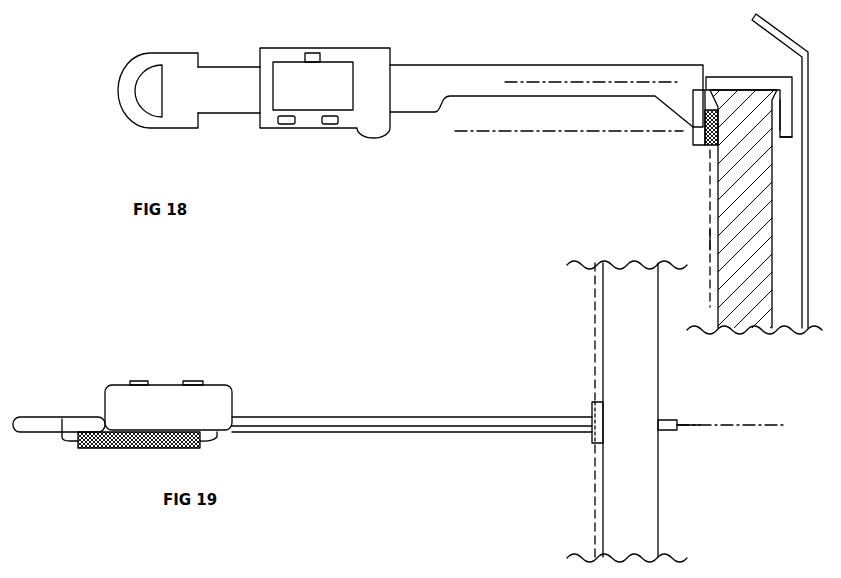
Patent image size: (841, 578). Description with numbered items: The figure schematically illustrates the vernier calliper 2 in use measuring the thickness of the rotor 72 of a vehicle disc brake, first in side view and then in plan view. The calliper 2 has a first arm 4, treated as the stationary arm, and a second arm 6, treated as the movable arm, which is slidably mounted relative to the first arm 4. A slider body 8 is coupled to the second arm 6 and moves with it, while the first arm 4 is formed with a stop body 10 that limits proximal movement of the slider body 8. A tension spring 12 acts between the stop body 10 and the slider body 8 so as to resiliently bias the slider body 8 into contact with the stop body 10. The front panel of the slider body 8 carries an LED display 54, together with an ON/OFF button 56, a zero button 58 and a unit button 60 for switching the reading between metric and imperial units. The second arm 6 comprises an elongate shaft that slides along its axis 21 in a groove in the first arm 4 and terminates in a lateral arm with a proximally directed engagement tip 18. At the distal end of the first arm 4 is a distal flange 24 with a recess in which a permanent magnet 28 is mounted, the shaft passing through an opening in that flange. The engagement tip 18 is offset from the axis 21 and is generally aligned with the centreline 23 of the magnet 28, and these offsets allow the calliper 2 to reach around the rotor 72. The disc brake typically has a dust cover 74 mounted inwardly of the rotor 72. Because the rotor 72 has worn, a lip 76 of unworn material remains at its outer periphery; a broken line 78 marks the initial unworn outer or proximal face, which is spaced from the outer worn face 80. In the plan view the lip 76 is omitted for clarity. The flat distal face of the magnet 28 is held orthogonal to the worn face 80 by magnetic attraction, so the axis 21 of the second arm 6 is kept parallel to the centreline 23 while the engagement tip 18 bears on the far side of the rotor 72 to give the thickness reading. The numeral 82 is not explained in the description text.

In FIG. 18, the vernier calliper 2 is at (447, 54).
In FIG. 19, the vernier calliper 2 is at (358, 361).
In FIG. 18, the first arm 4 is at (505, 75).
In FIG. 19, the first arm 4 is at (370, 414).
In FIG. 18, the second arm 6 is at (740, 77).
In FIG. 18, the slider body 8 is at (372, 62).
In FIG. 19, the slider body 8 is at (222, 400).
In FIG. 18, the stop body 10 is at (172, 118).
In FIG. 19, the stop body 10 is at (35, 425).
In FIG. 19, the tension spring 12 is at (93, 448).
In FIG. 18, the engagement tip 18 is at (770, 128).
In FIG. 19, the engagement tip 18 is at (677, 422).
In FIG. 18, the axis 21 is at (563, 82).
In FIG. 19, the axis 21 is at (775, 425).
In FIG. 18, the centreline 23 is at (514, 133).
In FIG. 19, the distal flange 24 is at (592, 435).
In FIG. 18, the permanent magnet 28 is at (700, 130).
In FIG. 19, the permanent magnet 28 is at (592, 405).
In FIG. 18, the LED display 54 is at (288, 98).
In FIG. 19, the LED display 54 is at (140, 381).
In FIG. 18, the ON/OFF button 56 is at (285, 126).
In FIG. 18, the zero button 58 is at (330, 126).
In FIG. 19, the zero button 58 is at (198, 381).
In FIG. 18, the unit button 60 is at (313, 53).
In FIG. 18, the rotor 72 is at (730, 207).
In FIG. 19, the rotor 72 is at (637, 330).
In FIG. 18, the dust cover 74 is at (808, 127).
In FIG. 18, the lip 76 is at (722, 88).
In FIG. 18, the broken line 78 is at (710, 238).
In FIG. 19, the broken line 78 is at (595, 542).
In FIG. 18, the worn face 80 is at (718, 176).
In FIG. 19, the worn face 80 is at (603, 312).
In FIG. 18, the side wall 82 is at (783, 152).
In FIG. 19, the side wall 82 is at (660, 525).